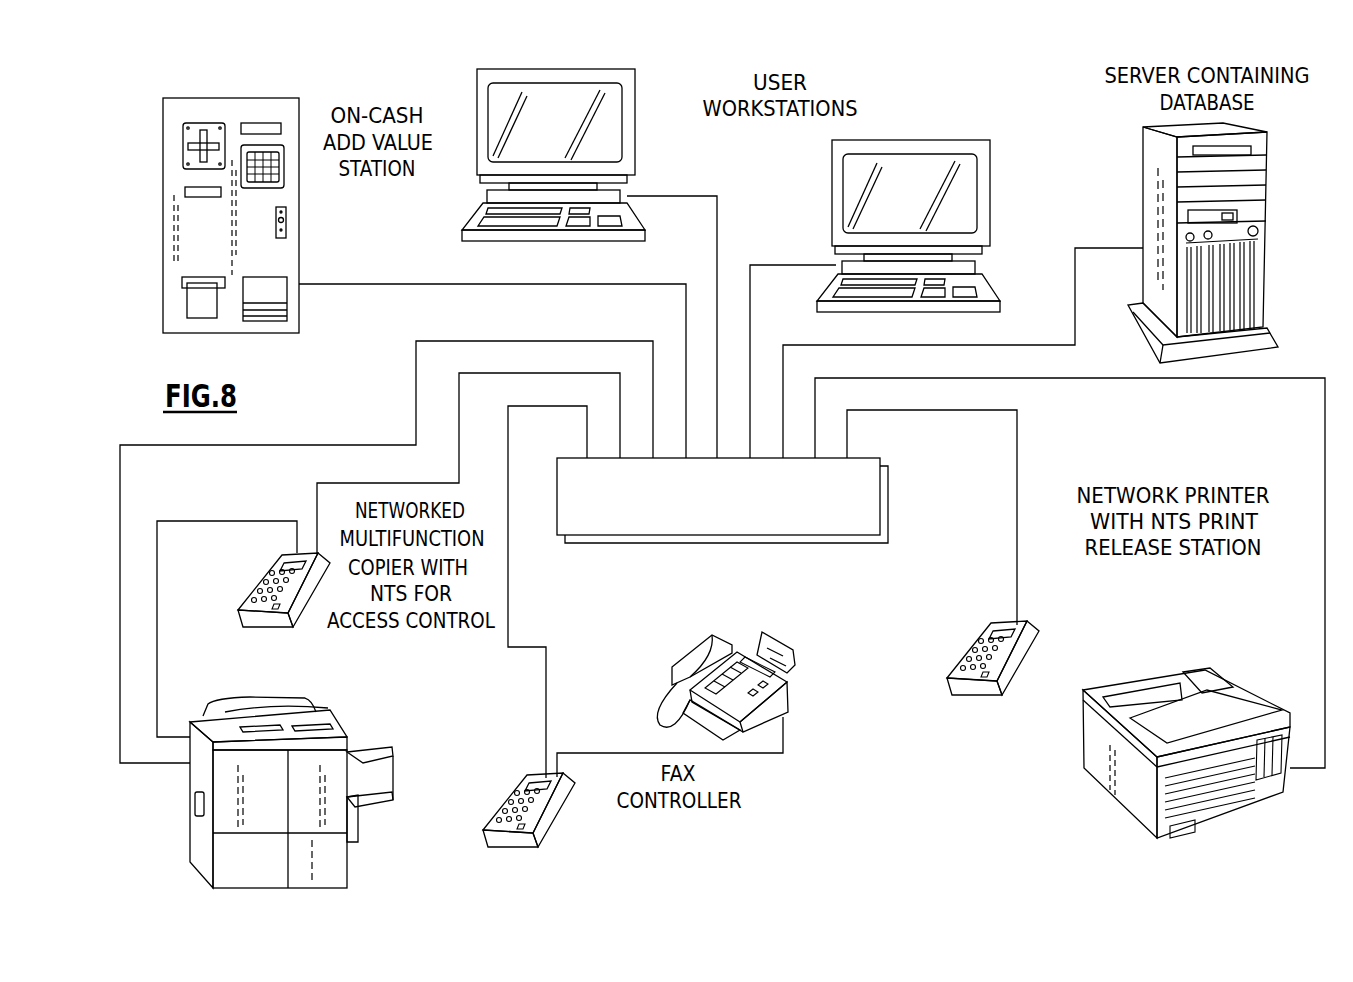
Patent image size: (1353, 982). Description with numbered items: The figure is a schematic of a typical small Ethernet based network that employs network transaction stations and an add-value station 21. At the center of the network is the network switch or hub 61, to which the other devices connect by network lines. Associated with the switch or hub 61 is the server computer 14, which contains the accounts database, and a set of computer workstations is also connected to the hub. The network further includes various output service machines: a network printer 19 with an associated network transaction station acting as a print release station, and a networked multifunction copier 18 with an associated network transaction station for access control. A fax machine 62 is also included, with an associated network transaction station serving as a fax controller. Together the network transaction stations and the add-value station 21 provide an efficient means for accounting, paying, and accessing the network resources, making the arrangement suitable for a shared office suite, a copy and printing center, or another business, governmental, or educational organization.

The server computer 14 is at (1267, 224).
The networked multifunction copier 18 is at (190, 802).
The network printer 19 is at (1083, 758).
The add-value station 21 is at (300, 245).
The network switch or hub 61 is at (758, 544).
The fax machine 62 is at (790, 702).